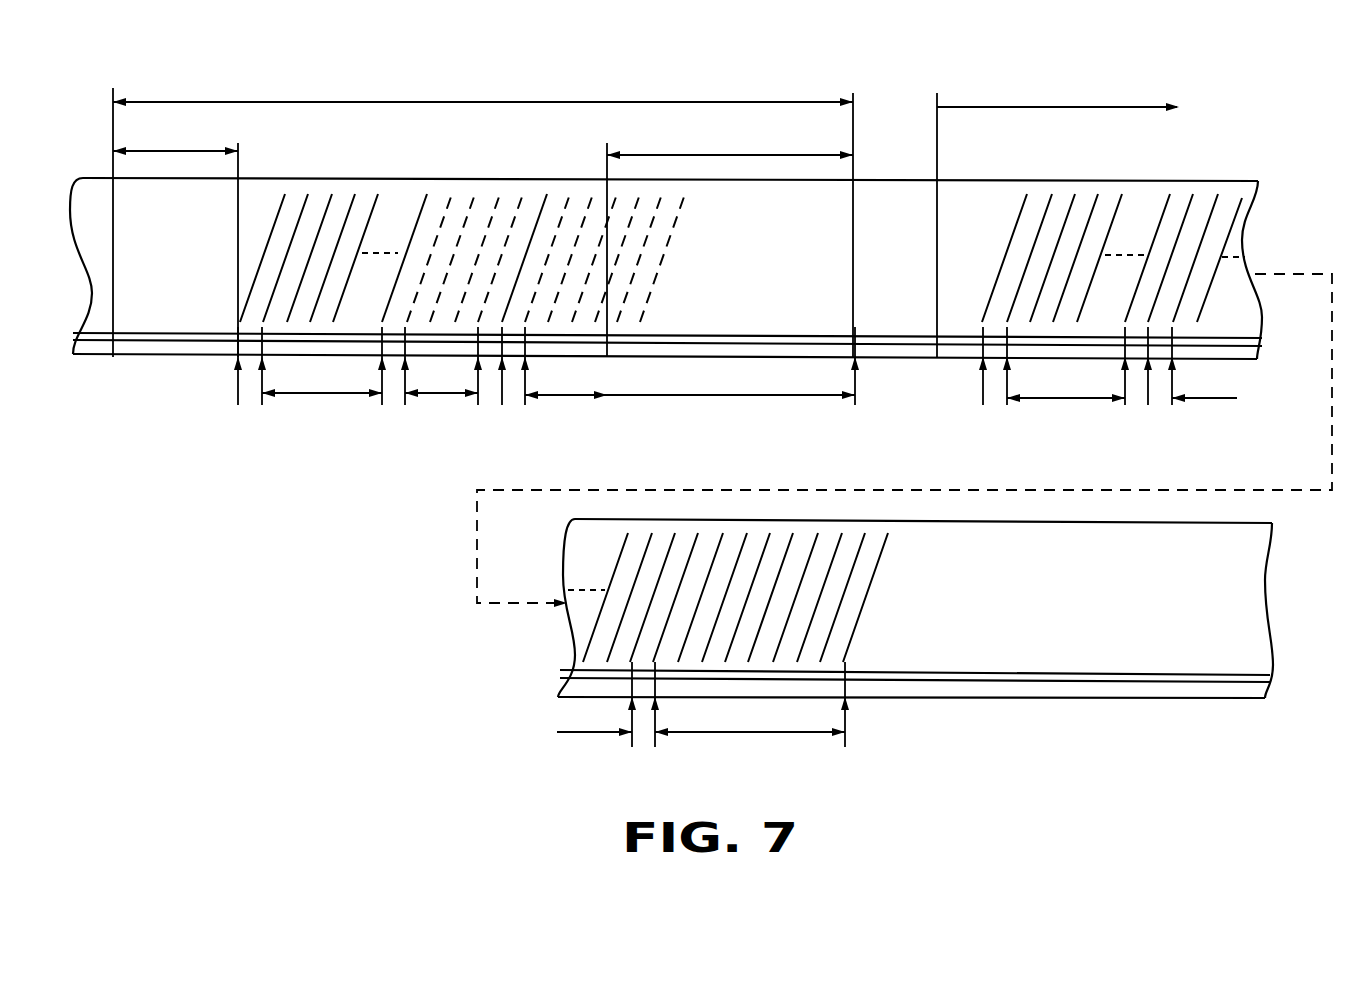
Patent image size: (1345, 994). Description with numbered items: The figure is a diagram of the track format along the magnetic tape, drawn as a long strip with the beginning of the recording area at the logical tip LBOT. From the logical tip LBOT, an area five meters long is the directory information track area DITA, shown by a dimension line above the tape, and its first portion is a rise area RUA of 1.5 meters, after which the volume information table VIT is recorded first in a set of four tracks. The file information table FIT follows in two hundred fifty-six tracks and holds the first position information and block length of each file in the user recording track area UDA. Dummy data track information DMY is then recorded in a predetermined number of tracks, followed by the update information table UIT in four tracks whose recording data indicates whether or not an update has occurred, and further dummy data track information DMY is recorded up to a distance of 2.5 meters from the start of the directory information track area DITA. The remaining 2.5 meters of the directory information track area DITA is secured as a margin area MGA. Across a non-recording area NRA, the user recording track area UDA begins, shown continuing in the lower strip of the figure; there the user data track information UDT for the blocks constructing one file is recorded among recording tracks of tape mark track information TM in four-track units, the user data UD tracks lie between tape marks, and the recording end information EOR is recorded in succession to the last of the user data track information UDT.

The logical tip LBOT is at (128, 209).
The directory information track area DITA is at (472, 88).
The 1.5 m rise area distance 1.5 is at (176, 151).
The 2.5 m track distance 2.5 is at (697, 142).
The user recording track area UDA is at (1065, 93).
The rise area RUA is at (180, 320).
The volume information table VIT is at (244, 383).
The file information table FIT is at (333, 393).
The dummy data track information DMY is at (442, 393).
The update information table UIT is at (510, 316).
The margin area MGA is at (740, 395).
The non-recording area NRA is at (901, 322).
The tape mark track information TM is at (1071, 388).
The user data track information UDT is at (1067, 398).
The user data UD is at (580, 732).
The recording end information EOR is at (757, 732).